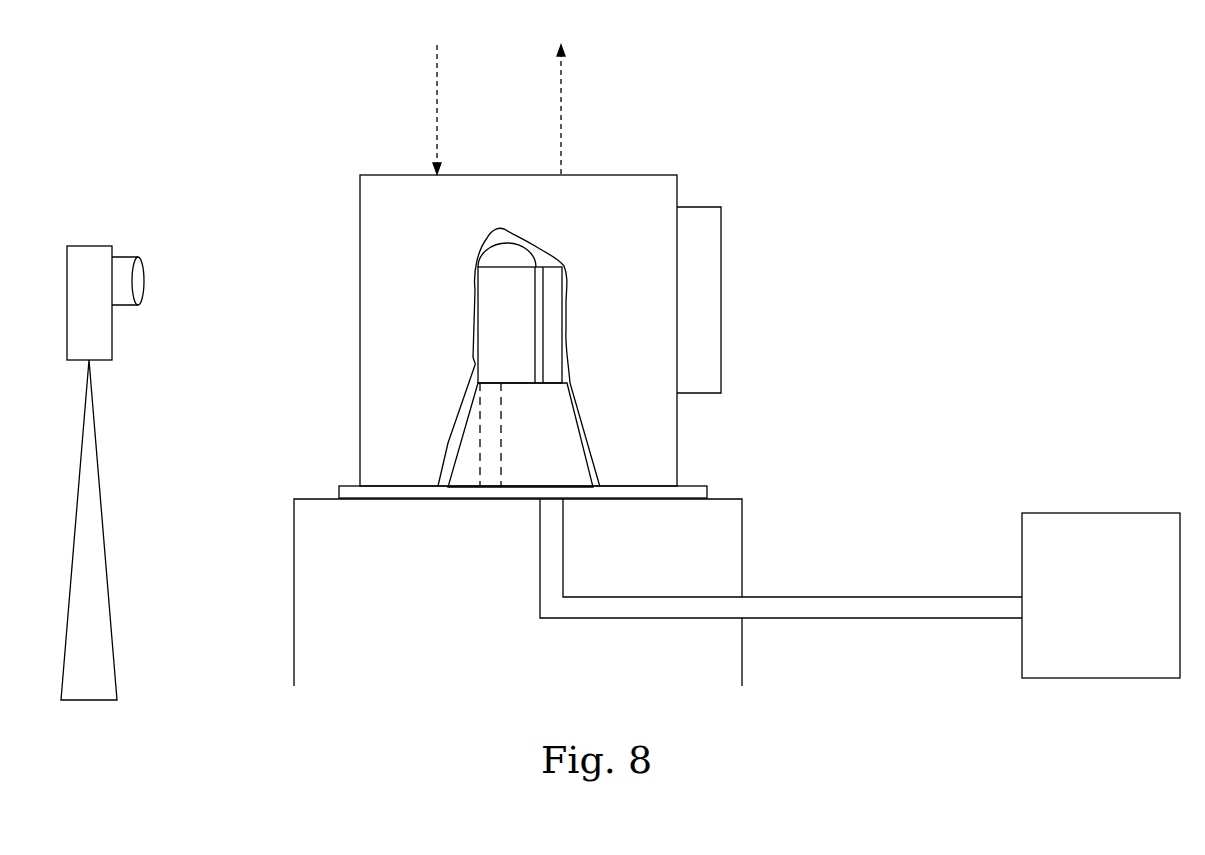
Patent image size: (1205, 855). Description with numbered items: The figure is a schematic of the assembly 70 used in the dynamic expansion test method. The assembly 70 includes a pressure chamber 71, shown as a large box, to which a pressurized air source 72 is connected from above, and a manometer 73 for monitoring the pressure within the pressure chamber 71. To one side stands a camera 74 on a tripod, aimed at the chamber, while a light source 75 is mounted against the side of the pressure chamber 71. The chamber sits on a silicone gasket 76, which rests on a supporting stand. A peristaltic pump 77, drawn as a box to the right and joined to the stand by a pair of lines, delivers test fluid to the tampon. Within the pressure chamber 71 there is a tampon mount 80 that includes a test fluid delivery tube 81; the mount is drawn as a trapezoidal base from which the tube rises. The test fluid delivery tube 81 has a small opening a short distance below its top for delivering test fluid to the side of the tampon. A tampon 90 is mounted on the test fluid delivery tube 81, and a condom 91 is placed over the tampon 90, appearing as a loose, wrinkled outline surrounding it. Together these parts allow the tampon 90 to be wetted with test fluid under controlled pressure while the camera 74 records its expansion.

The assembly 70 is at (822, 187).
The pressure chamber 71 is at (360, 220).
The pressurized air source 72 is at (437, 100).
The manometer 73 is at (561, 128).
The camera 74 is at (86, 246).
The light source 75 is at (722, 322).
The silicone gasket 76 is at (720, 492).
The peristaltic pump 77 is at (1060, 513).
The tampon mount 80 is at (552, 450).
The test fluid delivery tube 81 is at (550, 312).
The tampon 90 is at (502, 317).
The condom 91 is at (447, 445).